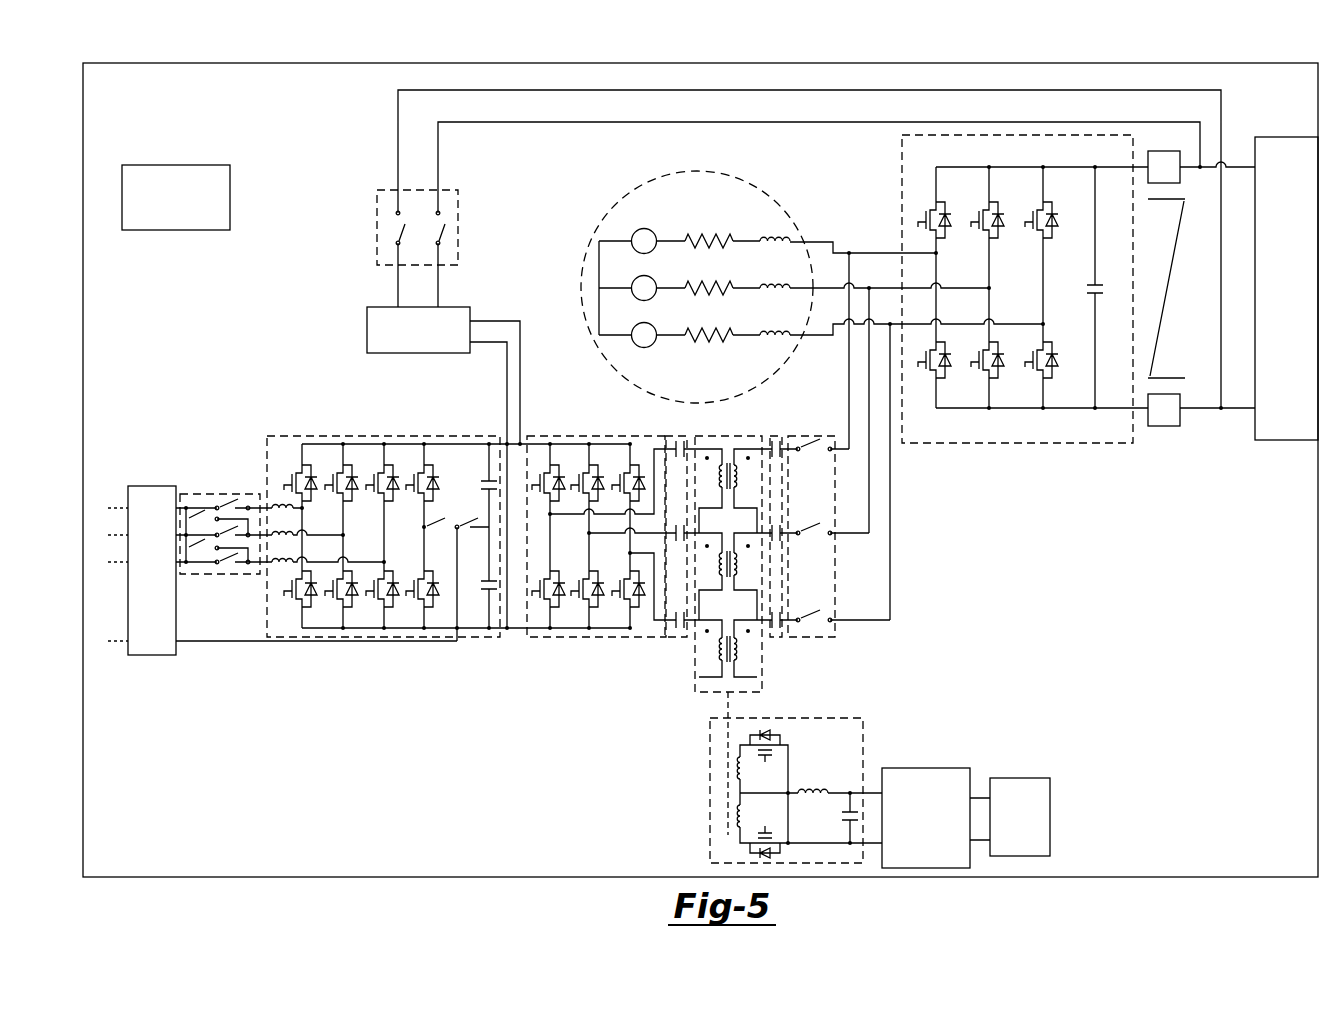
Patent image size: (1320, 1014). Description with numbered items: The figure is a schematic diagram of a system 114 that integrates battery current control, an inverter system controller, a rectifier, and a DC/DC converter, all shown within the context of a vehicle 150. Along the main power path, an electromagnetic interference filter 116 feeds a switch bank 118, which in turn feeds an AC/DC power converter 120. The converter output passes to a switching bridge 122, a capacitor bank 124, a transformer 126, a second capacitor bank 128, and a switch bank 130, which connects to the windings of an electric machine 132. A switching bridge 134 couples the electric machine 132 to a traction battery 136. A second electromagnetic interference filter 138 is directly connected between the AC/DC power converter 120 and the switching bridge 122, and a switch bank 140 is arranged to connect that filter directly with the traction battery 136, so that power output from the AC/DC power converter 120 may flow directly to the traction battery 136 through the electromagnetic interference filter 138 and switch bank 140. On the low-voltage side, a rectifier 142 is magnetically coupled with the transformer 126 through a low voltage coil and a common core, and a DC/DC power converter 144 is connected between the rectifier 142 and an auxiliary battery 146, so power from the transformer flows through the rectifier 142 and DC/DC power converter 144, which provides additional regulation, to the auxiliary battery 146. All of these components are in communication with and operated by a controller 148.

The system 114 is at (195, 768).
The electromagnetic interference filter 116 is at (150, 486).
The switch bank 118 is at (222, 494).
The AC/DC power converter 120 is at (330, 436).
The switching bridge 122 is at (592, 637).
The capacitor bank 124 is at (680, 637).
The transformer 126 is at (735, 436).
The capacitor bank 128 is at (772, 637).
The switch bank 130 is at (810, 637).
The electric machine 132 is at (581, 290).
The switching bridge 134 is at (900, 171).
The traction battery 136 is at (1287, 440).
The electromagnetic interference filter 138 is at (367, 330).
The switch bank 140 is at (376, 227).
The rectifier 142 is at (710, 790).
The DC/DC power converter 144 is at (893, 768).
The auxiliary battery 146 is at (1050, 820).
The controller 148 is at (178, 165).
The vehicle 150 is at (705, 62).